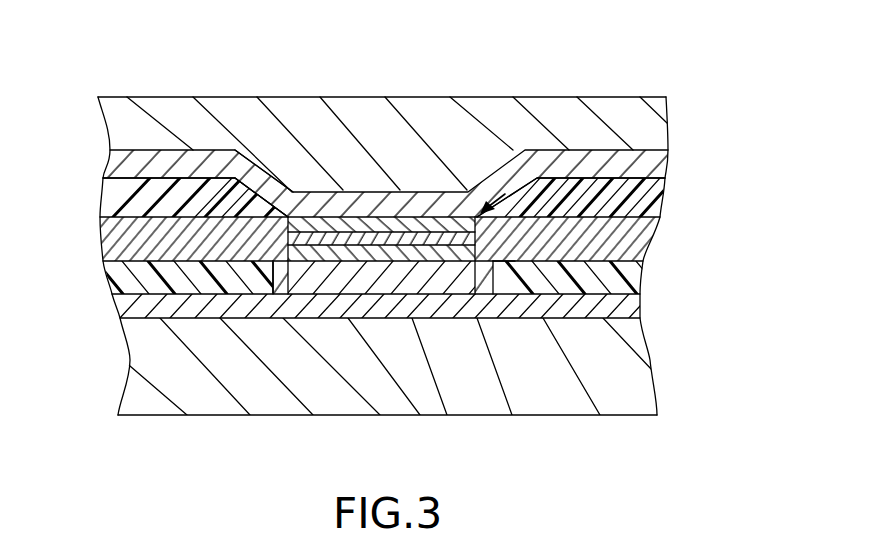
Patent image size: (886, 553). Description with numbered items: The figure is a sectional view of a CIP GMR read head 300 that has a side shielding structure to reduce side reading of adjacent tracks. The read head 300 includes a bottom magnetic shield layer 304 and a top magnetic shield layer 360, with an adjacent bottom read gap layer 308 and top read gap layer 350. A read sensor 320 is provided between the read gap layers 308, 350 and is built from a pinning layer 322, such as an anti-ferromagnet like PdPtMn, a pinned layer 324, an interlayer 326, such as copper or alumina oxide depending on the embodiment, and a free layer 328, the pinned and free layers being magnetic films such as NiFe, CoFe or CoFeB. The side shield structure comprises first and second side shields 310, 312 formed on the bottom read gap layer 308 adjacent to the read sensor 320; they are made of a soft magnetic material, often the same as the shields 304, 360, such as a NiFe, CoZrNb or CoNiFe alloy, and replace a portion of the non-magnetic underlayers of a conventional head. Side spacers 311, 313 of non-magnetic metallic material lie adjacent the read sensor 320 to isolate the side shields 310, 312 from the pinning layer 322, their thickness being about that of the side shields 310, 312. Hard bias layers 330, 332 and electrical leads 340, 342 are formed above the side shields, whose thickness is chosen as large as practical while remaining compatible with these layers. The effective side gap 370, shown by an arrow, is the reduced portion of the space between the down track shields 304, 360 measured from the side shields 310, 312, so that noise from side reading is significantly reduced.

The CIP read head 300 is at (100, 76).
The bottom magnetic shield layer 304 is at (645, 388).
The bottom read gap layer 308 is at (628, 307).
The first side shield 310 is at (633, 276).
The side spacer 311 is at (505, 262).
The second side shield 312 is at (107, 272).
The side spacer 313 is at (268, 276).
The read sensor 320 is at (311, 302).
The pinning layer 322 is at (418, 278).
The pinned layer 324 is at (447, 253).
The interlayer 326 is at (345, 242).
The free layer 328 is at (388, 233).
The hard bias layer 330 is at (637, 240).
The hard bias layer 332 is at (102, 238).
The electrical lead 340 is at (660, 197).
The electrical lead 342 is at (102, 193).
The top read gap layer 350 is at (645, 165).
The top magnetic shield layer 360 is at (652, 123).
The effective side gap 370 is at (153, 179).